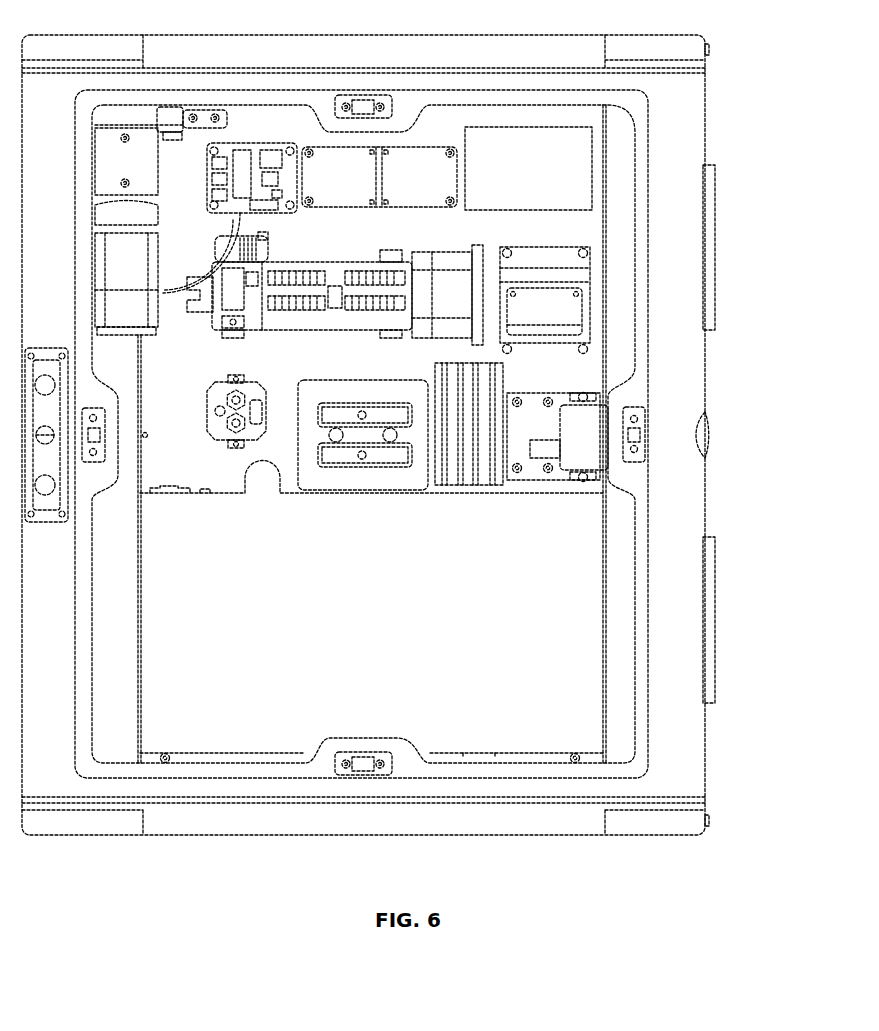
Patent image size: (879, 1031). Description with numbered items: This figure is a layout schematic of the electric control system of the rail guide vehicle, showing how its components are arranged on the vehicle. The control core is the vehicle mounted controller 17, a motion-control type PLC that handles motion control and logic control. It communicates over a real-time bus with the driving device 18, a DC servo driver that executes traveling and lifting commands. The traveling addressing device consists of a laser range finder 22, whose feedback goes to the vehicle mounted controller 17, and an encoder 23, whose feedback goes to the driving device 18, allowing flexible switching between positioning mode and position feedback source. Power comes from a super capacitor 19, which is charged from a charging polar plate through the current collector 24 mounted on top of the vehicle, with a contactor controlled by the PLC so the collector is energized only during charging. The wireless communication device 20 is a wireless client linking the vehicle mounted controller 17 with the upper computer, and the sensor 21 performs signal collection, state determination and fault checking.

The vehicle mounted controller 17 is at (560, 311).
The driving device 18 is at (270, 143).
The super capacitor 19 is at (503, 642).
The wireless communication device 20 is at (560, 155).
The sensor 21 is at (620, 755).
The laser range finder 22 is at (582, 440).
The encoder 23 is at (133, 313).
The current collector 24 is at (380, 477).